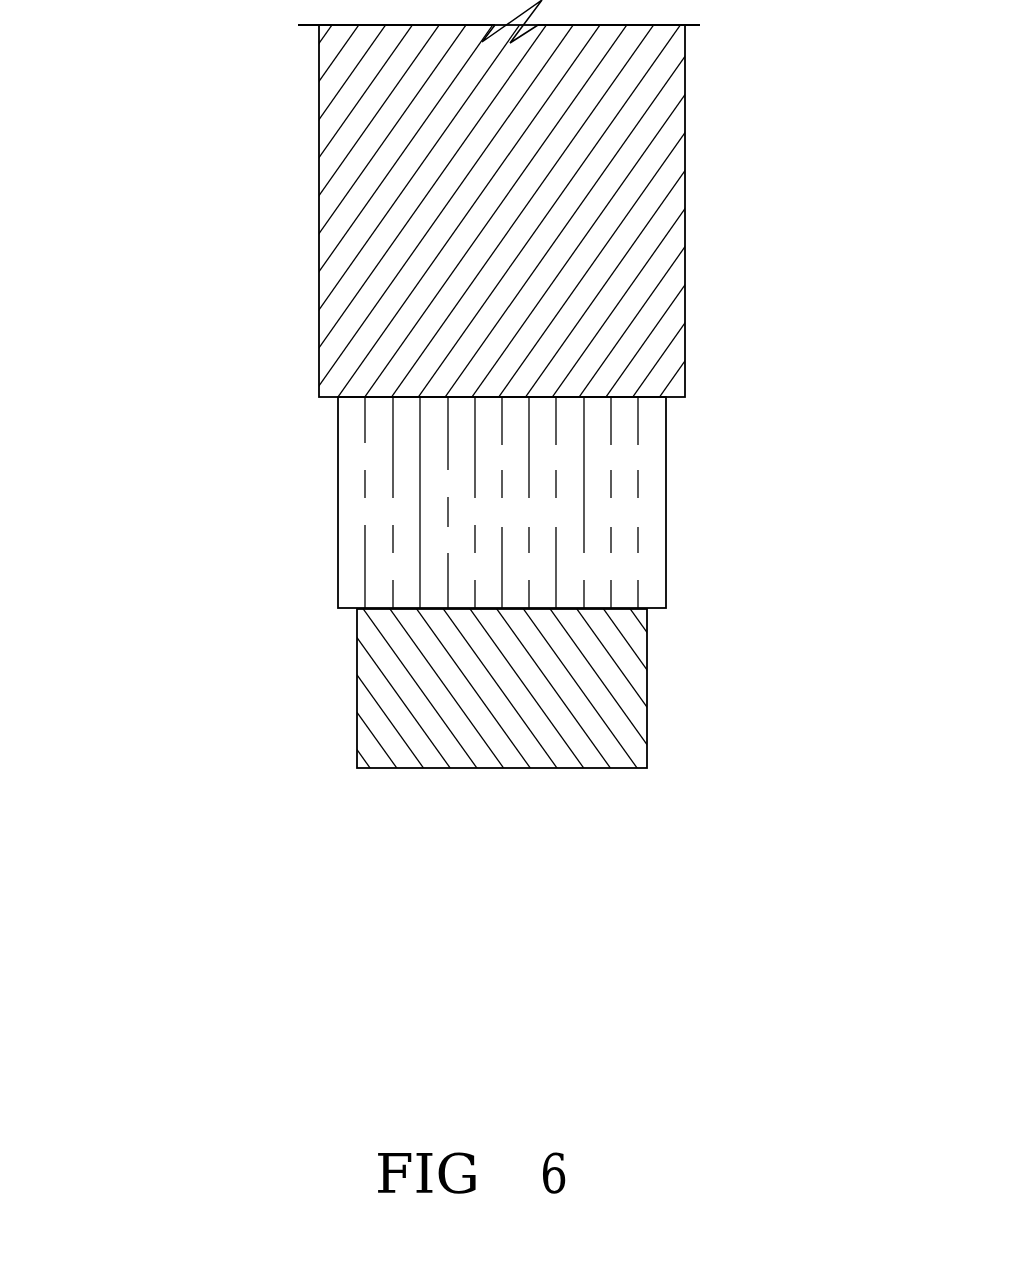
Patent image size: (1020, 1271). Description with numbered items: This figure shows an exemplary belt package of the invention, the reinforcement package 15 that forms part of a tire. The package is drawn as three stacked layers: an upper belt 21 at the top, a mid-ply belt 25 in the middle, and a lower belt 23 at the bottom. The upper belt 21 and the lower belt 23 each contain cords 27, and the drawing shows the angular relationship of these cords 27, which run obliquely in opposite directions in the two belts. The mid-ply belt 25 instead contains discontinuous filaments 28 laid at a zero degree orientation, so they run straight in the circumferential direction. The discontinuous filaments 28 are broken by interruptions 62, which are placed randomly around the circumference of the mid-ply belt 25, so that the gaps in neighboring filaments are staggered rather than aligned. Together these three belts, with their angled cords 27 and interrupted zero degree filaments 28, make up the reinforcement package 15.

The reinforcement package 15 is at (287, 852).
The upper belt 21 is at (318, 224).
The lower belt 23 is at (356, 710).
The mid-ply belt 25 is at (337, 528).
The cords 27 is at (663, 320).
The discontinuous filaments 28 is at (638, 552).
The interruptions 62 is at (390, 567).